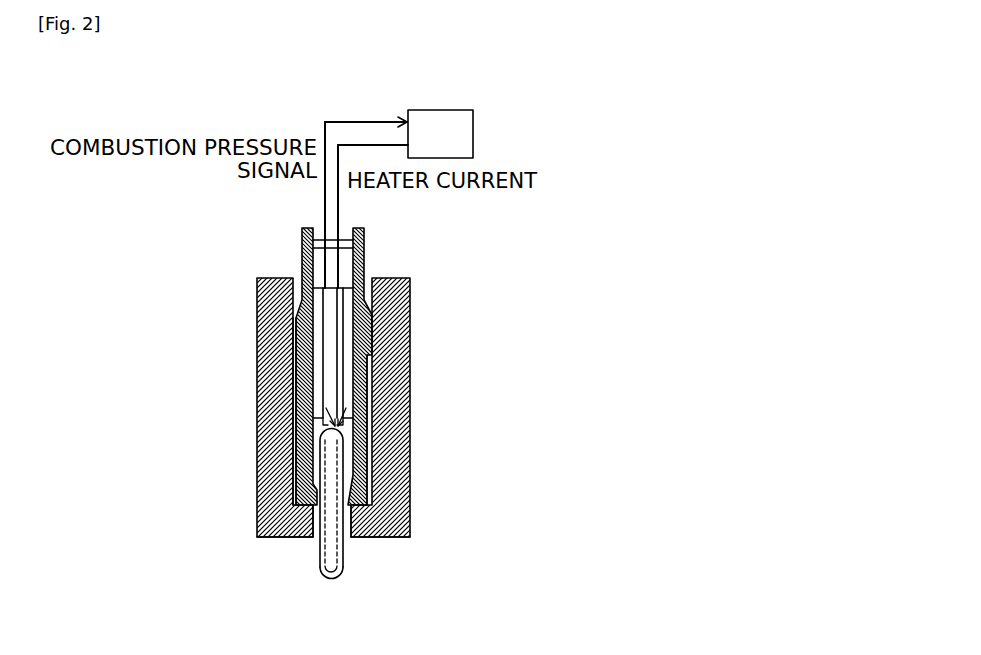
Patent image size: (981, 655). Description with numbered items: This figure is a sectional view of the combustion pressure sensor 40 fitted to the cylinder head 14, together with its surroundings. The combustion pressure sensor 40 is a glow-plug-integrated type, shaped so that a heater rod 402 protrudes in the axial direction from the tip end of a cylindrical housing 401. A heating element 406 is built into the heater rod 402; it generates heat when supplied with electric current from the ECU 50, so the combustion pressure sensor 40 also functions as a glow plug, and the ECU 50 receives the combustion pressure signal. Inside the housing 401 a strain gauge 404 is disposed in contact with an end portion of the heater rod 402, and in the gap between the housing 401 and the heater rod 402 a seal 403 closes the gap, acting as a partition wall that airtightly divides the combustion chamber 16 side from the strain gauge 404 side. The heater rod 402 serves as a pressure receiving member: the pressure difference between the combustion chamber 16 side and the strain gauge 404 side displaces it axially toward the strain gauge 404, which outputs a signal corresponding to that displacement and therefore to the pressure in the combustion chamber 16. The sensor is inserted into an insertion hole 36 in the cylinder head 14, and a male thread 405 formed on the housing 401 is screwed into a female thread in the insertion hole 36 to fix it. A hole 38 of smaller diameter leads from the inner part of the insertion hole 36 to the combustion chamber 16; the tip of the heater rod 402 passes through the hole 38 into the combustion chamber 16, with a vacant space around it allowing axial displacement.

The cylinder head 14 is at (275, 538).
The combustion chamber 16 is at (467, 594).
The insertion hole 36 is at (292, 445).
The hole 38 is at (312, 538).
The combustion pressure sensor 40 is at (350, 354).
The ECU 50 is at (442, 108).
The housing 401 is at (381, 394).
The heater rod 402 is at (343, 466).
The seal 403 is at (366, 434).
The strain gauge 404 is at (345, 267).
The male thread 405 is at (372, 337).
The heating element 406 is at (337, 557).